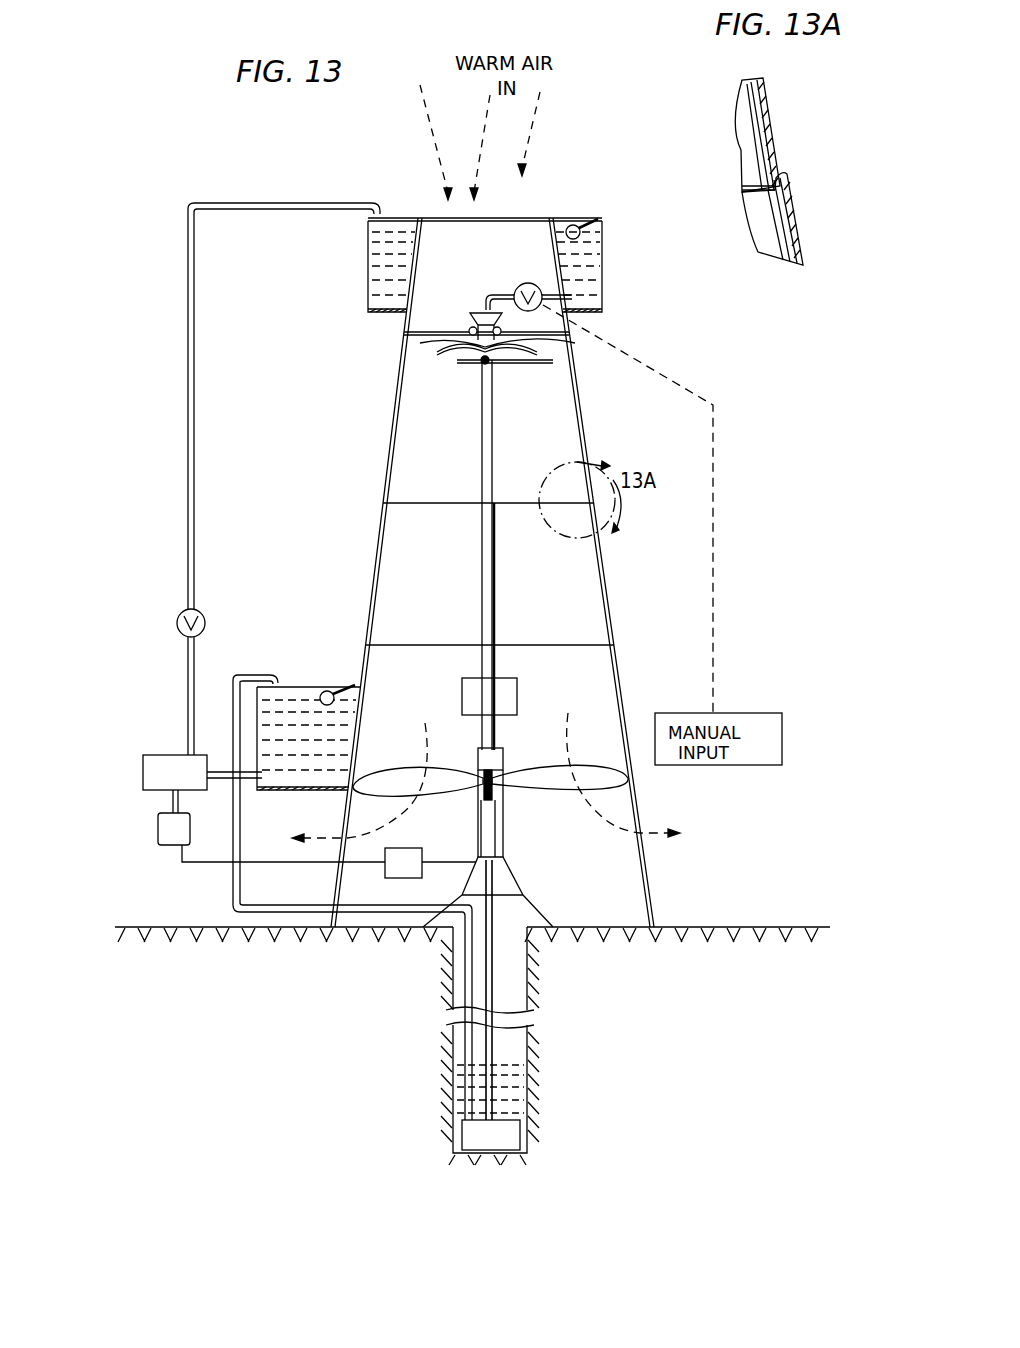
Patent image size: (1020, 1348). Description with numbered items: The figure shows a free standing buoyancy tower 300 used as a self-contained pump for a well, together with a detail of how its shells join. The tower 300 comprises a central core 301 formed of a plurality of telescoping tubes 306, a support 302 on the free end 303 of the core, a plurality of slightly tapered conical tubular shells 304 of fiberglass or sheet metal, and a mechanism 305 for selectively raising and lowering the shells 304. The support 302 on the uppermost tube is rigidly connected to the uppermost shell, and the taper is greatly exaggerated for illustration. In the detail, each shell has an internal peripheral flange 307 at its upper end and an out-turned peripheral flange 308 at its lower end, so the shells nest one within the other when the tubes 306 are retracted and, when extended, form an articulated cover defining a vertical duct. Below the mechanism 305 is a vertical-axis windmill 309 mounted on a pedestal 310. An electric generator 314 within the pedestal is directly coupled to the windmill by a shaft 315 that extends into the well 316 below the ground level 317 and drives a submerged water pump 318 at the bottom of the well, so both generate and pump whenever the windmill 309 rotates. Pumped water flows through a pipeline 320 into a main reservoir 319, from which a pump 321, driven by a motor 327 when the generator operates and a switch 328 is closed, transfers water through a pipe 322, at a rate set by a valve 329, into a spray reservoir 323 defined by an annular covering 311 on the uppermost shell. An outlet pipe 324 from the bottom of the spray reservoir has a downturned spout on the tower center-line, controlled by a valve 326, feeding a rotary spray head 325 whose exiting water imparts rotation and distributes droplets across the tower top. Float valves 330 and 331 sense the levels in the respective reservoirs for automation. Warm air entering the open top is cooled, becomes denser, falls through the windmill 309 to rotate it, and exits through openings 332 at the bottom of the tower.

In FIG. 13, the tower 300 is at (638, 323).
In FIG. 13, the central core 301 is at (478, 451).
In FIG. 13, the support 302 is at (560, 365).
In FIG. 13, the free end 303 is at (445, 346).
In FIG. 13, the conical tubular shells 304 is at (395, 415).
In FIG. 13A, the conical tubular shells 304 is at (770, 120).
In FIG. 13, the mechanism 305 is at (517, 697).
In FIG. 13, the telescoping tubes 306 is at (490, 460).
In FIG. 13A, the internal peripheral flange 307 is at (785, 172).
In FIG. 13A, the out-turned peripheral flange 308 is at (775, 193).
In FIG. 13, the vertical-axis windmill 309 is at (383, 775).
In FIG. 13, the pedestal 310 is at (505, 757).
In FIG. 13, the annular covering 311 is at (368, 266).
In FIG. 13, the electric generator 314 is at (510, 886).
In FIG. 13, the shaft 315 is at (496, 829).
In FIG. 13, the well 316 is at (527, 972).
In FIG. 13, the ground level 317 is at (752, 927).
In FIG. 13, the submerged water pump 318 is at (515, 1138).
In FIG. 13, the main reservoir 319 is at (257, 703).
In FIG. 13, the pipeline 320 is at (233, 895).
In FIG. 13, the pump 321 is at (170, 755).
In FIG. 13, the pipe 322 is at (188, 513).
In FIG. 13, the spray reservoir 323 is at (600, 253).
In FIG. 13, the outlet pipe 324 is at (485, 290).
In FIG. 13, the spray head 325 is at (580, 344).
In FIG. 13, the valve 326 is at (528, 283).
In FIG. 13, the motor 327 is at (158, 832).
In FIG. 13, the switch 328 is at (398, 878).
In FIG. 13, the valve 329 is at (205, 613).
In FIG. 13, the float valve 330 is at (325, 690).
In FIG. 13, the float valve 331 is at (576, 225).
In FIG. 13, the openings 332 is at (648, 862).